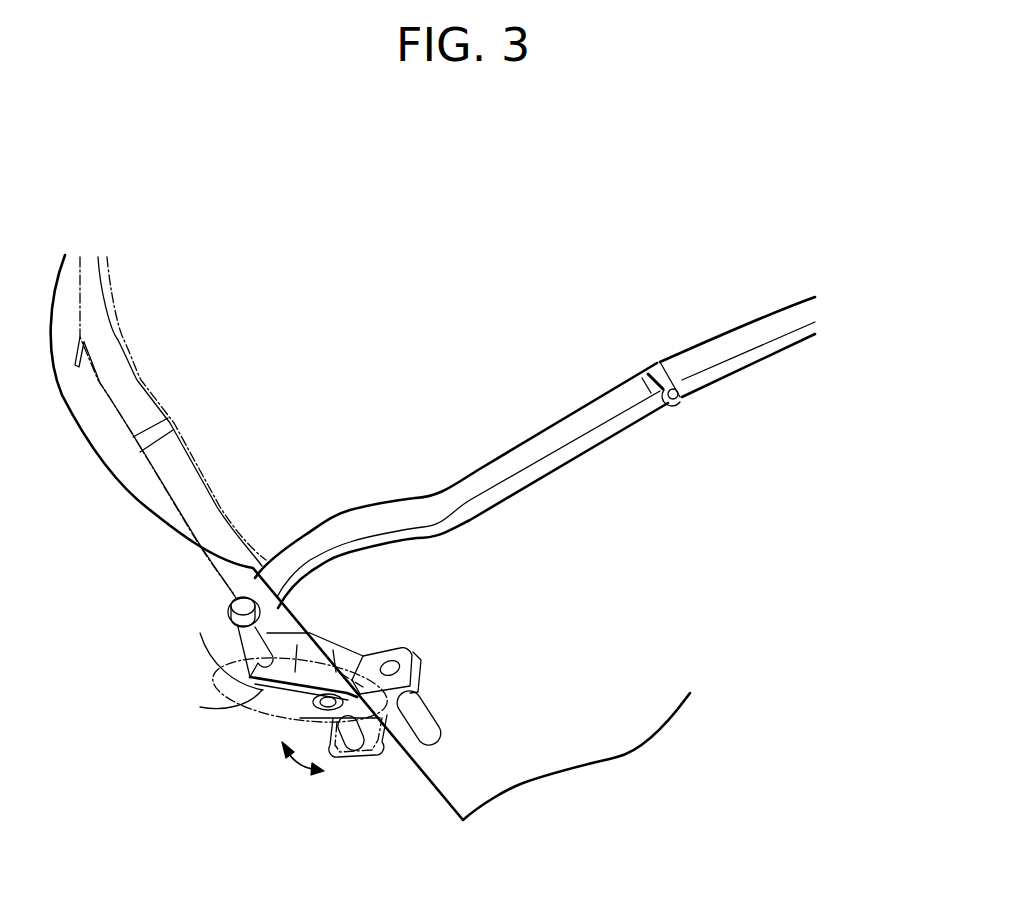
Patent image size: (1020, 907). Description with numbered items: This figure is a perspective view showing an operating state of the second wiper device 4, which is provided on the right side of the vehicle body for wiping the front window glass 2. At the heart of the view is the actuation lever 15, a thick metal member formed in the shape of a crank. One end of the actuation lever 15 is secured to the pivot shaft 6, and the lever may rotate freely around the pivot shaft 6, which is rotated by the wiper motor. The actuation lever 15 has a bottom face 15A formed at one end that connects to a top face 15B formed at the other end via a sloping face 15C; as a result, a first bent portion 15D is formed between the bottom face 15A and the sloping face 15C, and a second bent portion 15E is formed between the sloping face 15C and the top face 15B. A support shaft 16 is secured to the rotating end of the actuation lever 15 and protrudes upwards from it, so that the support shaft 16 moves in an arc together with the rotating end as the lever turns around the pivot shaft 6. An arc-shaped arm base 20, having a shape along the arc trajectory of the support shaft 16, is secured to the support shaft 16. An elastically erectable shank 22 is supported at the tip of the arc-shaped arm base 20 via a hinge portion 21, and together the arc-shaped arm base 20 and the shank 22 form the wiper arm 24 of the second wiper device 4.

The front window glass 2 is at (694, 547).
The second wiper device 4 is at (647, 318).
The pivot shaft 6 is at (428, 707).
The actuation lever 15 is at (403, 650).
The bottom face 15A is at (420, 663).
The top face 15B is at (247, 685).
The sloping face 15C is at (333, 650).
The first bent portion 15D is at (372, 672).
The second bent portion 15E is at (300, 702).
The support shaft 16 is at (222, 638).
The arc-shaped arm base 20 is at (297, 550).
The hinge portion 21 is at (178, 414).
The shank 22 is at (133, 367).
The wiper arm 24 is at (506, 499).